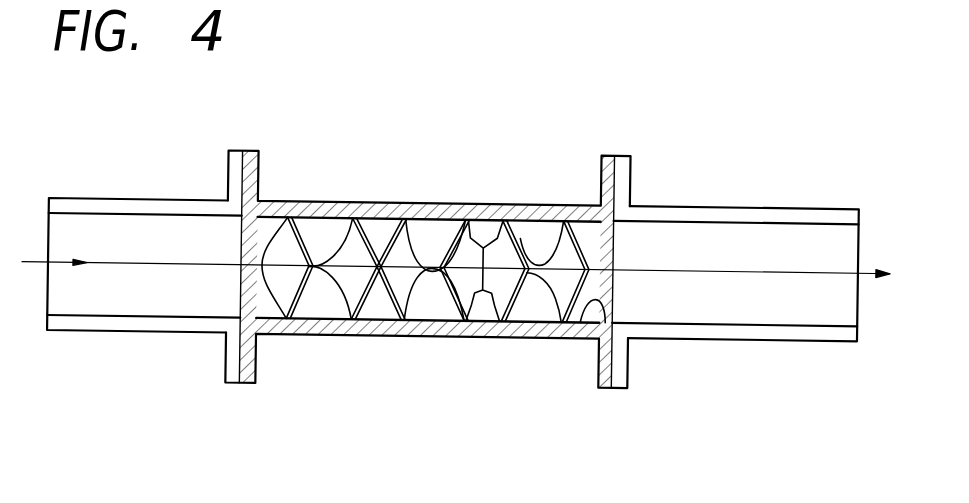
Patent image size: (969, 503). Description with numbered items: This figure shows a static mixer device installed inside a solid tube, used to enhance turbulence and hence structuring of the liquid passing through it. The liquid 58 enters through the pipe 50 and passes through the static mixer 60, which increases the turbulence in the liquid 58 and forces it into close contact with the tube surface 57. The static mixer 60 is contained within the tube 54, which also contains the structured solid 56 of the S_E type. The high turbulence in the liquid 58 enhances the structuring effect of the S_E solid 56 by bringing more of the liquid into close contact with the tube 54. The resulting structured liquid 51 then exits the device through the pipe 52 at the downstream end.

The pipe 50 is at (133, 198).
The structured liquid 51 is at (660, 240).
The pipe 52 is at (727, 215).
The tube 54 is at (445, 200).
The structured solid S_E 56 is at (515, 208).
The tube surface 57 is at (597, 306).
The liquid 58 is at (122, 297).
The static mixer 60 is at (400, 285).